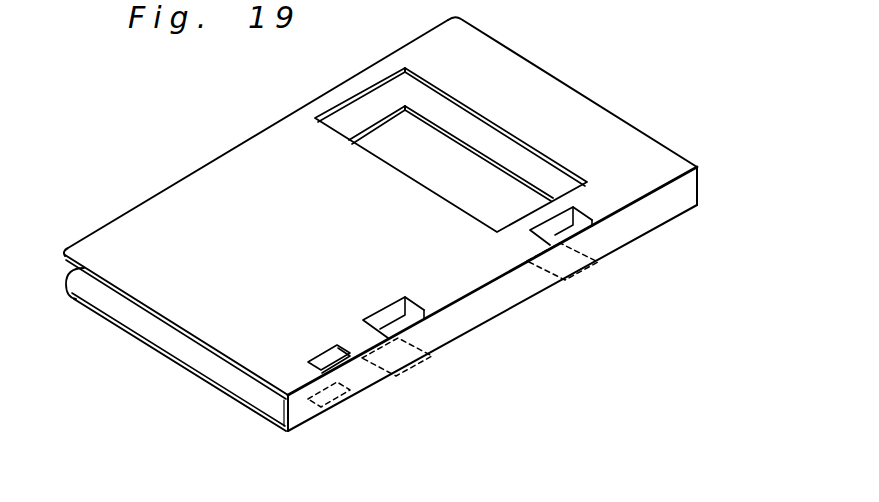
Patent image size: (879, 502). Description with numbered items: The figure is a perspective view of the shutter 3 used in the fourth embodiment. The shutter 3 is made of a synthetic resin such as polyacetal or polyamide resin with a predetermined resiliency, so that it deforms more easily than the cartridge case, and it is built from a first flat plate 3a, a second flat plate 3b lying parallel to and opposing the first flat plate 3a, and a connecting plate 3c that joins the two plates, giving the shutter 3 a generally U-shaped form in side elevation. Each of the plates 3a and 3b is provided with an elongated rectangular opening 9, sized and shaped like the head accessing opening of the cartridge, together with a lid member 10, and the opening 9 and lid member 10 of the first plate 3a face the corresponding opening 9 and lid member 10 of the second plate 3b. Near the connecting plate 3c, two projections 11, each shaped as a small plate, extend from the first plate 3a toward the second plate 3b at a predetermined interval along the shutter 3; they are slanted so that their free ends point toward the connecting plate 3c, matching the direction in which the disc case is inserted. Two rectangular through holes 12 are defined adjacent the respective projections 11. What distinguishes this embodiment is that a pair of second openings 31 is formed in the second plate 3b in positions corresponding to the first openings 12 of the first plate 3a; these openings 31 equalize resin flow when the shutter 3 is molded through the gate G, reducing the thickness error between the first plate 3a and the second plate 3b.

The shutter 3 is at (130, 182).
The first flat plate 3a is at (160, 292).
The second flat plate 3b is at (185, 347).
The connecting plate 3c is at (477, 312).
The elongated rectangular opening 9 is at (472, 147).
The lid member 10 is at (263, 338).
The projection 11 is at (388, 313).
The through hole 12 is at (412, 312).
The second opening 31 is at (376, 368).
The gate G is at (700, 181).